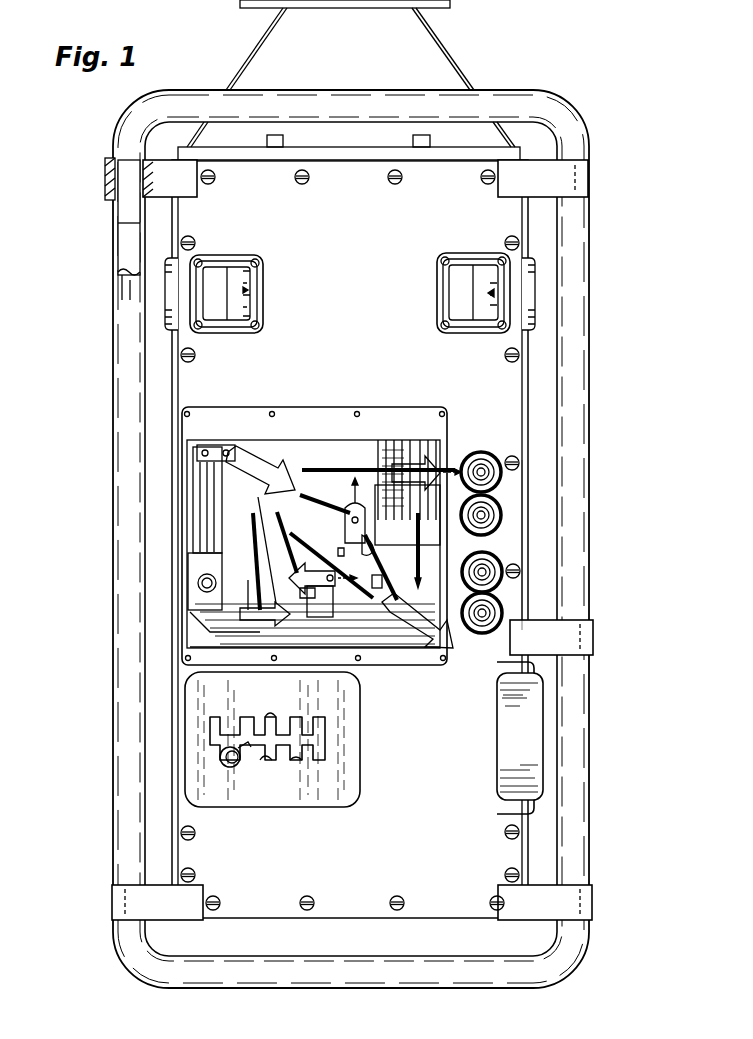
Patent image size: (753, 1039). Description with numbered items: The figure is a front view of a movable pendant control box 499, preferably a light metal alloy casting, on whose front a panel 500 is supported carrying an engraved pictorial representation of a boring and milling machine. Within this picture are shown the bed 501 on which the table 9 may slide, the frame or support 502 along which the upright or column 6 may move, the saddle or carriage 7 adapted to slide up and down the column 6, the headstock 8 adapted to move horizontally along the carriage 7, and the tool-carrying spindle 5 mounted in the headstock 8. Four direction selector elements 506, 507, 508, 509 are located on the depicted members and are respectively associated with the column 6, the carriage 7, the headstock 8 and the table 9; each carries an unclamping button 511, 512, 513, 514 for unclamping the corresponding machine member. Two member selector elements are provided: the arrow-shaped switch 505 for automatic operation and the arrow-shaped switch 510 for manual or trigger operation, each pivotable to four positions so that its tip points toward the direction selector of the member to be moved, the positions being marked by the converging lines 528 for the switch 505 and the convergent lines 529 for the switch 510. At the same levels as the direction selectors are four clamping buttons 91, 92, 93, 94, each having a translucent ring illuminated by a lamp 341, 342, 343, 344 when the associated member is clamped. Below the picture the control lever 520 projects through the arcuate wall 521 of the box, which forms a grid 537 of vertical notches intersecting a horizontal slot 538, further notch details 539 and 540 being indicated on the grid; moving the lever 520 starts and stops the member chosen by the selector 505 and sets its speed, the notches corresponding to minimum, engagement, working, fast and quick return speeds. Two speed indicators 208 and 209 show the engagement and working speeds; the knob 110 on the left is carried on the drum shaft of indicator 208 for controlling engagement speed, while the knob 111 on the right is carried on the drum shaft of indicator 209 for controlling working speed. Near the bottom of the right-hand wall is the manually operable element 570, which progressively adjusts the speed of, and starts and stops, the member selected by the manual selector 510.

The knob 110 is at (165, 305).
The knob 111 is at (535, 287).
The speed indicator 208 is at (243, 291).
The speed indicator 209 is at (460, 284).
The panel 500 is at (333, 450).
The automatic operation selector element 505 is at (260, 472).
The direction selector element 506 is at (436, 466).
The direction selector element 507 is at (366, 514).
The direction selector element 508 is at (325, 572).
The direction selector element 509 is at (246, 587).
The manual operation selector element 510 is at (410, 636).
The unclamping button 511 is at (415, 446).
The unclamping button 512 is at (372, 540).
The unclamping button 513 is at (323, 584).
The unclamping button 514 is at (252, 628).
The converging lines 528 is at (308, 468).
The convergent lines 529 is at (420, 530).
The bed 501 is at (350, 652).
The frame or support 502 is at (385, 652).
The tool-carrying spindle 5 is at (300, 592).
The column 6 is at (378, 452).
The carriage 7 is at (346, 532).
The headstock 8 is at (342, 548).
The table 9 is at (245, 615).
The clamping button 91 is at (488, 468).
The clamping button 92 is at (490, 512).
The clamping button 93 is at (488, 566).
The clamping button 94 is at (490, 608).
The lamp 341 is at (488, 482).
The lamp 342 is at (492, 524).
The lamp 343 is at (495, 568).
The lamp 344 is at (496, 612).
The box 499 is at (538, 533).
The arcuate wall 521 is at (345, 750).
The grid 537 is at (325, 737).
The slot 538 is at (290, 752).
The gate notch 539 is at (268, 715).
The gate notch 540 is at (294, 760).
The control lever 520 is at (236, 766).
The manually operable element 570 is at (545, 755).